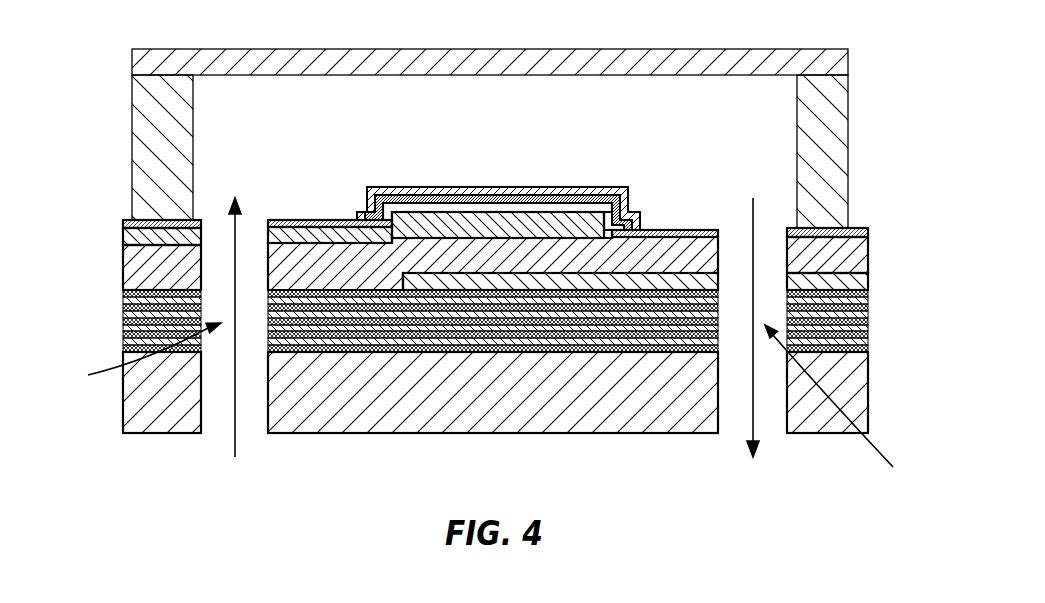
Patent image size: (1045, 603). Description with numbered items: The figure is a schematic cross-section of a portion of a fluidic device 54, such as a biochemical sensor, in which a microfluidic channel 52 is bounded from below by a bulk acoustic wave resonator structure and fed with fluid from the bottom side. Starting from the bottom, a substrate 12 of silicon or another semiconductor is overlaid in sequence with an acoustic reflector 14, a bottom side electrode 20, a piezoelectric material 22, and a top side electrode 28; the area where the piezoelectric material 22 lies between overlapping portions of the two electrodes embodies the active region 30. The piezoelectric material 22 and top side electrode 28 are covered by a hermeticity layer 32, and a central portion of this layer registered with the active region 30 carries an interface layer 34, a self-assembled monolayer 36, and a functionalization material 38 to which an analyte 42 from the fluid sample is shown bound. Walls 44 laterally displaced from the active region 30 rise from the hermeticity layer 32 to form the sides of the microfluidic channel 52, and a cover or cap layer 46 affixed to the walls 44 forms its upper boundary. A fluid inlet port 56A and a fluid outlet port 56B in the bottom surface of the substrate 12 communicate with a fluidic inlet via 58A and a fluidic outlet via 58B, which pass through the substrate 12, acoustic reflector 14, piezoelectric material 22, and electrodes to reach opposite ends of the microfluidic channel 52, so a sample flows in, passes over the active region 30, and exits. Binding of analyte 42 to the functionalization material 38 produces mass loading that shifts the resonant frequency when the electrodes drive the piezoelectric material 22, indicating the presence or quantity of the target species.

The substrate 12 is at (868, 385).
The acoustic reflector 14 is at (884, 293).
The bottom side electrode 20 is at (870, 285).
The piezoelectric material 22 is at (123, 270).
The top side electrode 28 is at (123, 233).
The active region 30 is at (393, 125).
The hermeticity layer 32 is at (862, 228).
The interface layer 34 is at (645, 213).
The self-assembled monolayer 36 is at (636, 188).
The functionalization material 38 is at (372, 170).
The analyte 42 is at (612, 150).
The walls 44 is at (850, 150).
The cover or cap layer 46 is at (778, 77).
The microfluidic channel 52 is at (297, 112).
The fluidic device 54 is at (478, 131).
The fluid inlet port 56A is at (217, 428).
The fluid outlet port 56B is at (777, 426).
The fluidic inlet via 58A is at (125, 359).
The fluidic outlet via 58B is at (855, 404).